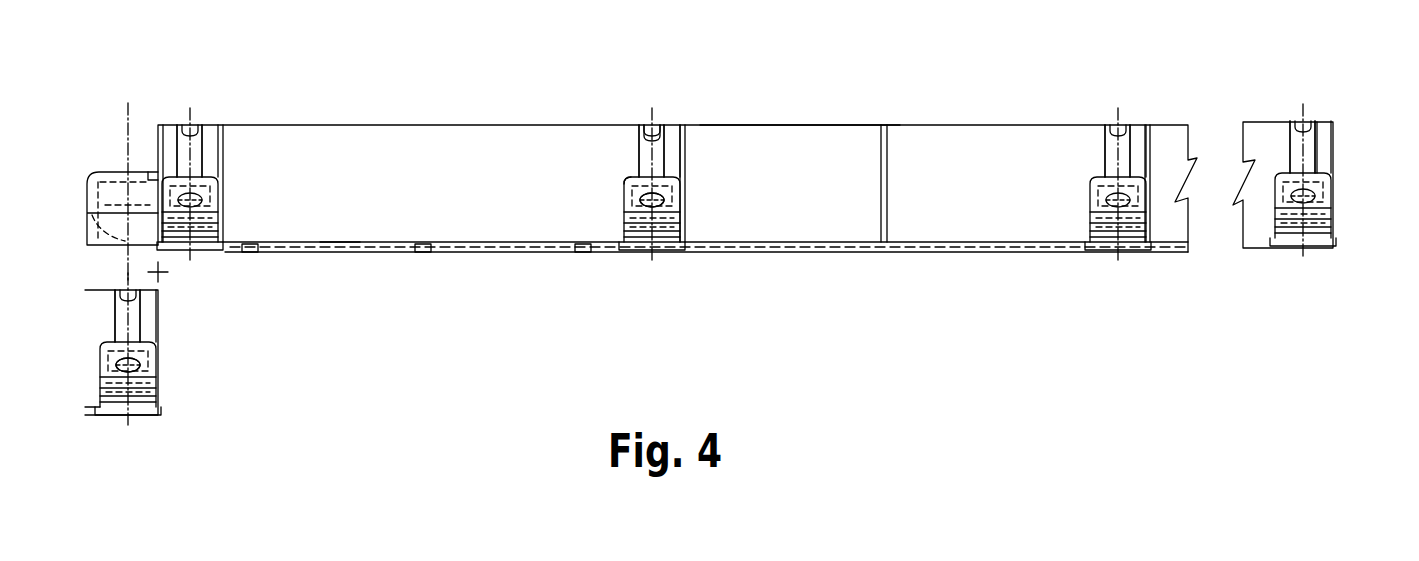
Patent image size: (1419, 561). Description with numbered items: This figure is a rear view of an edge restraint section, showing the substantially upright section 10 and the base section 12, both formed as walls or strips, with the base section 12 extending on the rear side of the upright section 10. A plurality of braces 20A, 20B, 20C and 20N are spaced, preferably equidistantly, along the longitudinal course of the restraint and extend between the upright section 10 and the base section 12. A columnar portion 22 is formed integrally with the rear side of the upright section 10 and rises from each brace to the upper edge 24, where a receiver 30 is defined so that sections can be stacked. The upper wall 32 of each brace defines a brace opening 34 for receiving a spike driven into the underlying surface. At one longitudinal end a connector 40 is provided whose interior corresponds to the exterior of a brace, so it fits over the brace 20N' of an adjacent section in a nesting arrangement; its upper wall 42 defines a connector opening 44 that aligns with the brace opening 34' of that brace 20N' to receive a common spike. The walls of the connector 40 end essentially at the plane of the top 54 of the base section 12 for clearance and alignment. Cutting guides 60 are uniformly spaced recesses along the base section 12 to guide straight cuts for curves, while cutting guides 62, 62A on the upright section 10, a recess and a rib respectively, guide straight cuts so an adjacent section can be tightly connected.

The upright section 10 is at (433, 140).
The base section 12 is at (358, 253).
The brace 20A is at (216, 206).
The brace 20B is at (681, 202).
The brace 20C is at (1090, 196).
The brace 20N is at (1315, 181).
The brace of adjacent edge restraint section 20N' is at (157, 350).
The columnar portion 22 is at (196, 158).
The upper edge 24 is at (769, 118).
The receiver 30 is at (657, 124).
The upper wall 32 is at (628, 180).
The brace opening 34 is at (680, 187).
The brace opening 34' is at (99, 345).
The connector 40 is at (102, 163).
The upper wall 42 is at (72, 176).
The connector opening 44 is at (136, 174).
The top of the base section 54 is at (333, 228).
The cutting guides 60 is at (283, 258).
The cutting guide 62 is at (684, 146).
The cutting guide 62A is at (889, 136).